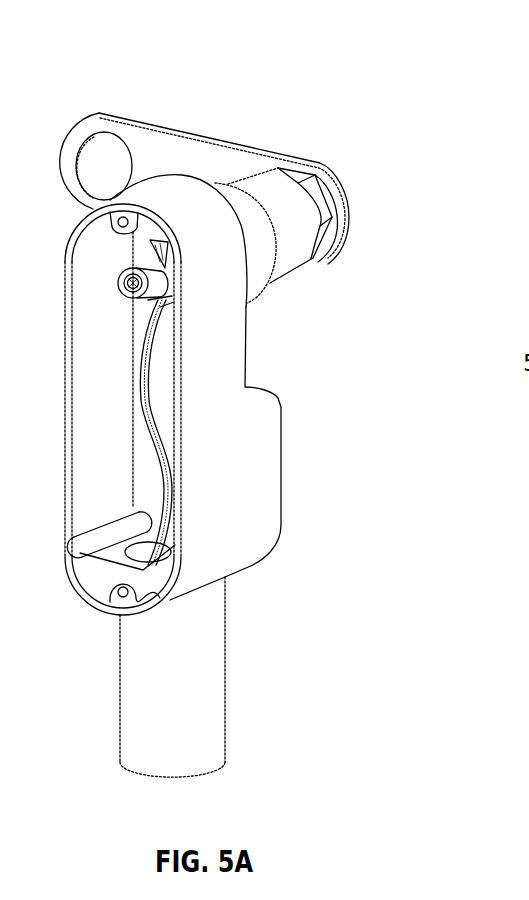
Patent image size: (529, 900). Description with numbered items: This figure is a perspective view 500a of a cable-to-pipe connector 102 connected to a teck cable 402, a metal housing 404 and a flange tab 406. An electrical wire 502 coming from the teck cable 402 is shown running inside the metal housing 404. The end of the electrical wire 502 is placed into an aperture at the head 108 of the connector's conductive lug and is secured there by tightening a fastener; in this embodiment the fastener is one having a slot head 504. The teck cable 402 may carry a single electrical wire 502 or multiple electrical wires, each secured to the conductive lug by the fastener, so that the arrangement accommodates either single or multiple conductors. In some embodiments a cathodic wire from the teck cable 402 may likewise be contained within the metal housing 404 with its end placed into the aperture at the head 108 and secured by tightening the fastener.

The perspective view 500a is at (265, 72).
The flange tab 406 is at (163, 152).
The head 108 is at (157, 267).
The cable-to-pipe connector 102 is at (291, 287).
The metal housing 404 is at (245, 490).
The slot head 504 is at (118, 283).
The electrical wire 502 is at (147, 372).
The teck cable 402 is at (155, 710).